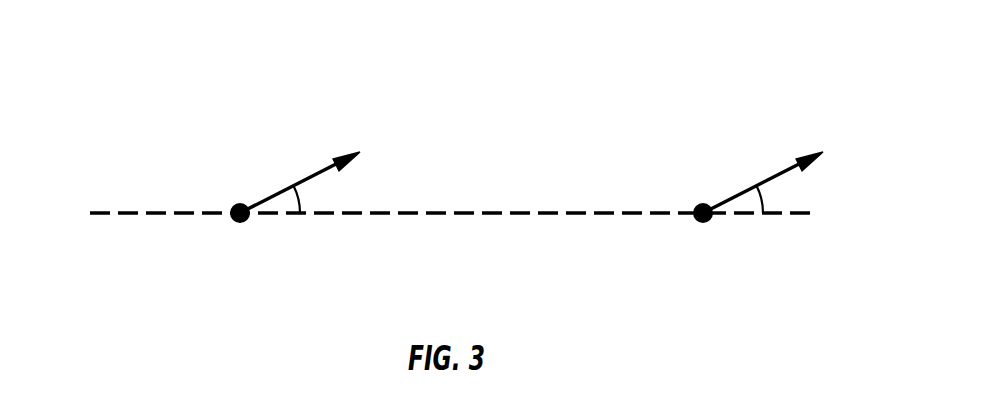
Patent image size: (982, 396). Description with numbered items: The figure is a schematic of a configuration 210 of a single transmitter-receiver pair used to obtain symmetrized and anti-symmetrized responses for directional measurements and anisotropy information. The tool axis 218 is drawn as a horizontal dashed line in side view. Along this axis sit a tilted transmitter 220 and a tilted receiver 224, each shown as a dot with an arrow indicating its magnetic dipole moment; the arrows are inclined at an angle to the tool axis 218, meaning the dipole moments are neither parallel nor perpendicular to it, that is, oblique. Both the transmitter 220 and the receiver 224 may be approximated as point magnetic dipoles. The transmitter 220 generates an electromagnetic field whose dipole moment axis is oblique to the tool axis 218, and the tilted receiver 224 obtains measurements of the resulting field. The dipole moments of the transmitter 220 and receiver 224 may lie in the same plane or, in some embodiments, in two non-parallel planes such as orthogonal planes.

The configuration 210 is at (658, 92).
The tool axis 218 is at (172, 213).
The tilted transmitter 220 is at (241, 224).
The tilted receiver 224 is at (703, 224).